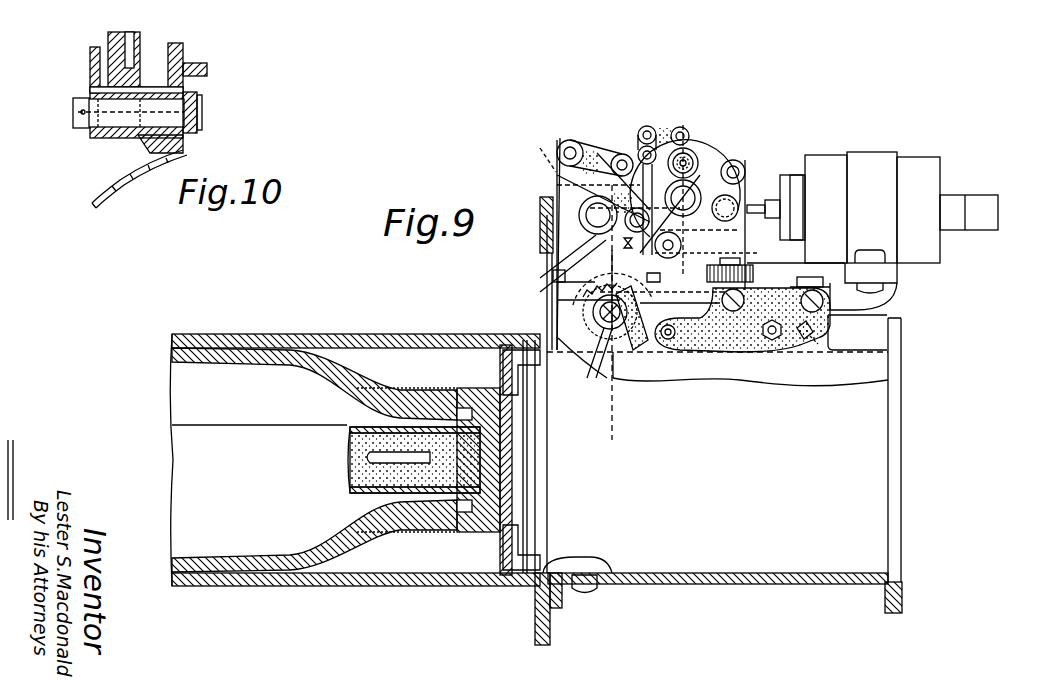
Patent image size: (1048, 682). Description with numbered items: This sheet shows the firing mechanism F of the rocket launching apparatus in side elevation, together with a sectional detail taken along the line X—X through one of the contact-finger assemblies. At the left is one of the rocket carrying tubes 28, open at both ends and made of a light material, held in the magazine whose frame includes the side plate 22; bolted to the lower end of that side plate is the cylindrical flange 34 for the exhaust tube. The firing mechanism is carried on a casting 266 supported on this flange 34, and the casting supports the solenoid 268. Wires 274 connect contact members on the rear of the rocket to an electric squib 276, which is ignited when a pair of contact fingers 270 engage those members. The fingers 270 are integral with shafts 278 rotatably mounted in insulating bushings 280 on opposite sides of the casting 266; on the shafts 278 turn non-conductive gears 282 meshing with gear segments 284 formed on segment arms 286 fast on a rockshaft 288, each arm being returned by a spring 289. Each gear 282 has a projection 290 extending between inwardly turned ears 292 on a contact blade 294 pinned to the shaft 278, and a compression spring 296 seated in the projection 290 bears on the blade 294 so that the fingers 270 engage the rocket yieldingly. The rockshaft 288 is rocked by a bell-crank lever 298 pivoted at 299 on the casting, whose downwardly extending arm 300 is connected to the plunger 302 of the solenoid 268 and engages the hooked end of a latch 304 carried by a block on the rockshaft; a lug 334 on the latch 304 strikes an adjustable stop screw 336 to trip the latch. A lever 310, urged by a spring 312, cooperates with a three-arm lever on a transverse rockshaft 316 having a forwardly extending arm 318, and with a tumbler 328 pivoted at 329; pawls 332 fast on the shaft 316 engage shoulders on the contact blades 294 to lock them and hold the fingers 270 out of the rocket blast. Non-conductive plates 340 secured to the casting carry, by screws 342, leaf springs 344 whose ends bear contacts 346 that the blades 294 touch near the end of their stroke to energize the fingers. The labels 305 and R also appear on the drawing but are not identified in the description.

In FIG. 9, the side plate 22 is at (540, 240).
In FIG. 9, the rocket carrying tube 28 is at (314, 580).
In FIG. 10, the cylindrical flange 34 is at (133, 180).
In FIG. 9, the cylindrical flange 34 is at (693, 585).
In FIG. 10, the casting 266 is at (184, 62).
In FIG. 9, the casting 266 is at (747, 166).
In FIG. 9, the solenoid 268 is at (925, 165).
In FIG. 9, the contact fingers 270 is at (606, 444).
In FIG. 9, the wires 274 is at (470, 378).
In FIG. 9, the electric squib 276 is at (352, 462).
In FIG. 10, the shaft 278 is at (75, 113).
In FIG. 9, the shaft 278 is at (594, 322).
In FIG. 10, the bushing 280 is at (199, 99).
In FIG. 10, the gear 282 is at (103, 140).
In FIG. 9, the gear 282 is at (598, 336).
In FIG. 10, the gear segment 284 is at (143, 56).
In FIG. 9, the gear segment 284 is at (690, 293).
In FIG. 9, the segment arm 286 is at (626, 281).
In FIG. 9, the rockshaft 288 is at (686, 198).
In FIG. 9, the spring 289 is at (579, 147).
In FIG. 9, the projection 290 is at (716, 294).
In FIG. 9, the ears 292 is at (606, 333).
In FIG. 10, the contact blade 294 is at (91, 66).
In FIG. 9, the contact blade 294 is at (574, 292).
In FIG. 9, the compression spring 296 is at (640, 352).
In FIG. 9, the bell-crank lever 298 is at (703, 141).
In FIG. 9, the pivot 299 is at (734, 160).
In FIG. 9, the lever arm 300 is at (746, 222).
In FIG. 9, the plunger 302 is at (780, 198).
In FIG. 9, the latch 304 is at (748, 252).
In FIG. 9, the roller 305 is at (770, 200).
In FIG. 9, the lever 310 is at (646, 127).
In FIG. 9, the spring 312 is at (679, 128).
In FIG. 9, the transverse rockshaft 316 is at (582, 206).
In FIG. 9, the forwardly extending arm 318 is at (580, 218).
In FIG. 9, the tumbler 328 is at (537, 150).
In FIG. 9, the pivot 329 is at (622, 154).
In FIG. 9, the pawl 332 is at (553, 282).
In FIG. 9, the lug 334 is at (673, 260).
In FIG. 9, the adjustable stop screw 336 is at (770, 263).
In FIG. 9, the plate 340 is at (773, 365).
In FIG. 9, the screw 342 is at (778, 354).
In FIG. 9, the leaf spring 344 is at (740, 353).
In FIG. 9, the contact 346 is at (680, 353).
In FIG. 9, the liner R is at (226, 350).
In FIG. 9, the firing mechanism F is at (716, 131).
In FIG. 9, the section line X— X is at (629, 444).